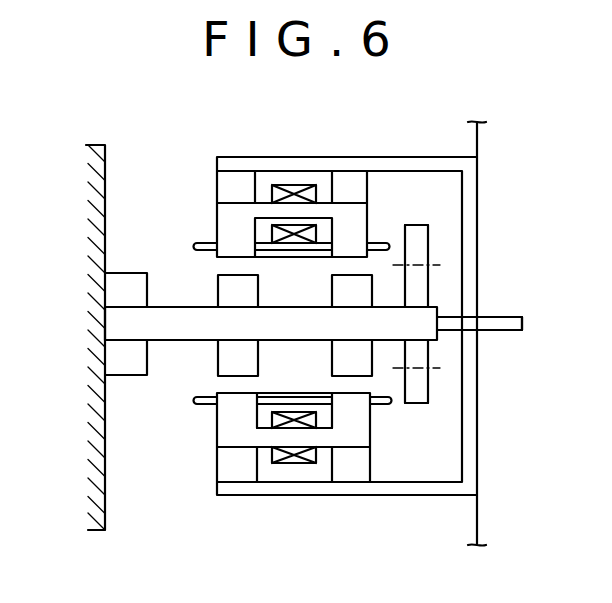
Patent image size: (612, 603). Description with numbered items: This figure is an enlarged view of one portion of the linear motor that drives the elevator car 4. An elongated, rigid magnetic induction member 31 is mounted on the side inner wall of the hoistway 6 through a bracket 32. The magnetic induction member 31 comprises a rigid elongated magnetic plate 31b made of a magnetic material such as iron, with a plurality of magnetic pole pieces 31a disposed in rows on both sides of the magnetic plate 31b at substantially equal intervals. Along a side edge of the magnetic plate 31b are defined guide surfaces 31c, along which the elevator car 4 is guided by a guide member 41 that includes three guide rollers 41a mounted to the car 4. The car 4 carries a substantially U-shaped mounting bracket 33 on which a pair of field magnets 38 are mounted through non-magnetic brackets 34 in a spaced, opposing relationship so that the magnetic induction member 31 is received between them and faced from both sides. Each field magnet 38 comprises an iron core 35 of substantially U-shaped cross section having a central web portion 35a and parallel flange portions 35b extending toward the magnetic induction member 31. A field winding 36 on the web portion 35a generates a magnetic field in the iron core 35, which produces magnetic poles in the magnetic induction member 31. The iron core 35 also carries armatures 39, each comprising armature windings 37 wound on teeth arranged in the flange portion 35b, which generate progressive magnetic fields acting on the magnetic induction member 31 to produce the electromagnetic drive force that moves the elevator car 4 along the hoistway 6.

The elevator car 4 is at (477, 517).
The hoistway 6 is at (100, 518).
The magnetic induction member 31 is at (118, 312).
The magnetic pole pieces 31a is at (219, 287).
The magnetic plate 31b is at (106, 336).
The guide surfaces 31c is at (418, 306).
The bracket 32 is at (127, 376).
The mounting bracket 33 is at (425, 157).
The non-magnetic brackets 34 is at (380, 158).
The iron core 35 is at (222, 215).
The web portion 35a is at (320, 440).
The flange portions 35b is at (363, 420).
The field winding 36 is at (291, 184).
The armature windings 37 is at (198, 246).
The field magnets 38 is at (300, 465).
The armatures 39 is at (198, 404).
The guide member 41 is at (500, 314).
The guide rollers 41a is at (430, 227).